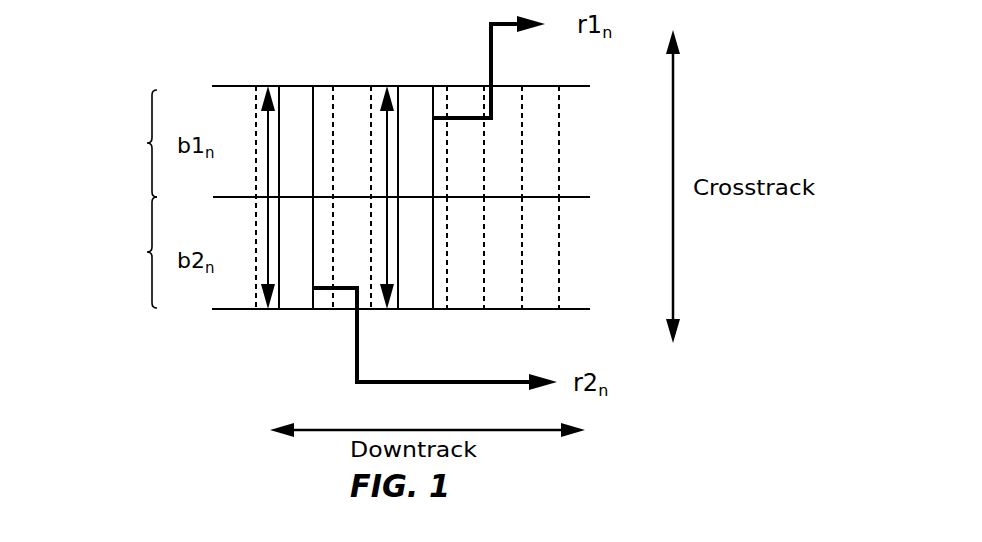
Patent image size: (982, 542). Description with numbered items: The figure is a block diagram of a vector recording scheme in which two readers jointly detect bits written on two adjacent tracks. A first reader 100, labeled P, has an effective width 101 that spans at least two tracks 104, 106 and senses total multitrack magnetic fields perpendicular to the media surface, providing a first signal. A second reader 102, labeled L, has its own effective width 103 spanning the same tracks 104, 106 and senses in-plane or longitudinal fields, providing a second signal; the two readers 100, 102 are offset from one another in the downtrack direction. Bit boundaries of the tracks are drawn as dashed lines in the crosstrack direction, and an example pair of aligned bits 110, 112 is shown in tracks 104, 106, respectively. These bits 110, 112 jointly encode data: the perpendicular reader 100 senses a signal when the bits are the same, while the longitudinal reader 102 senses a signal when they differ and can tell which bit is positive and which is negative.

The first reader 100 is at (305, 95).
The effective width 101 is at (267, 263).
The second reader 102 is at (420, 92).
The effective width 103 is at (387, 263).
The track 104 is at (147, 143).
The track 106 is at (147, 252).
The bit 110 is at (542, 140).
The bit 112 is at (542, 248).